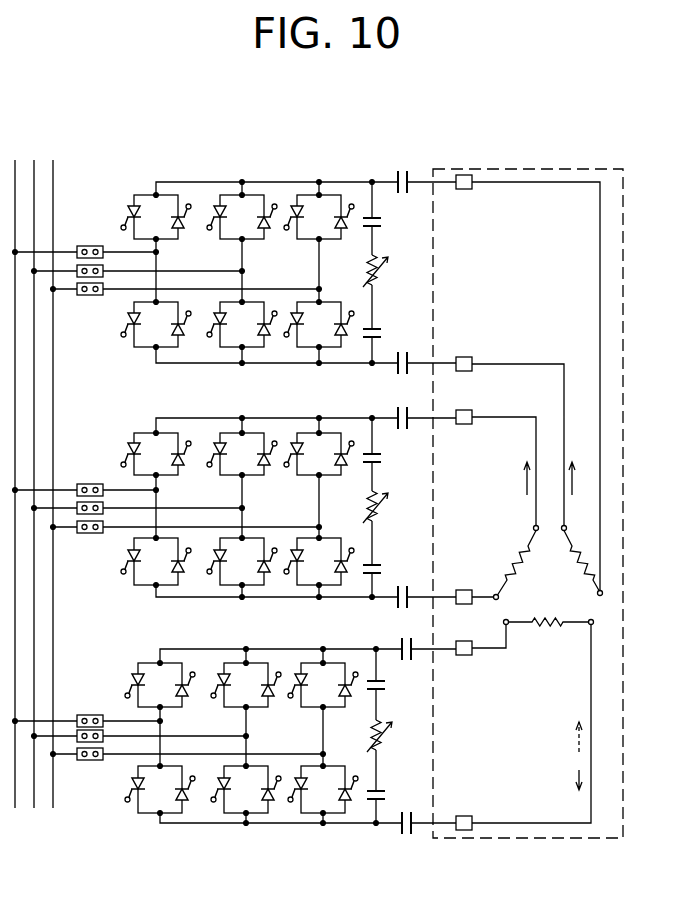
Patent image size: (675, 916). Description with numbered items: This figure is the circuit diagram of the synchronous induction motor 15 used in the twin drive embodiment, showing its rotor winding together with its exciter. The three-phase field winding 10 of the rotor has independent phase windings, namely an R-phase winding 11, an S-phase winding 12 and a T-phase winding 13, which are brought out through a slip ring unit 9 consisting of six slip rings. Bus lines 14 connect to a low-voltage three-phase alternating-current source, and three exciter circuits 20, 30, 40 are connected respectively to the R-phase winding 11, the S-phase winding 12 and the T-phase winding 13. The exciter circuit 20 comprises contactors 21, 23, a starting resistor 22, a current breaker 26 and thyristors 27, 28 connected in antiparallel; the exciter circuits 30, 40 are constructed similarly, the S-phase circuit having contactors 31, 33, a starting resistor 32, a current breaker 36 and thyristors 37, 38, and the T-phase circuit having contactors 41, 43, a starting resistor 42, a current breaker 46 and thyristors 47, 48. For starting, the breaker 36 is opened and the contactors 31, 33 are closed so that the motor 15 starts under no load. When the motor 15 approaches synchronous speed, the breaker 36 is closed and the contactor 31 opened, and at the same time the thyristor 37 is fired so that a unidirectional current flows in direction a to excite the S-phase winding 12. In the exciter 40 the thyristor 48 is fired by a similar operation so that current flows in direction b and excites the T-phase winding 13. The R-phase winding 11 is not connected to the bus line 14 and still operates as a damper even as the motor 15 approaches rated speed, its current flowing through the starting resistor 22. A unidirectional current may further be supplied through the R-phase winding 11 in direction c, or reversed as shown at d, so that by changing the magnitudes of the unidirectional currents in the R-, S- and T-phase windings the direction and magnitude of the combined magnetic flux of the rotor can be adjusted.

The slip ring unit 9 is at (462, 815).
The three-phase field winding 10 is at (548, 624).
The R-phase winding 11 is at (543, 630).
The S-phase winding 12 is at (520, 578).
The T-phase winding 13 is at (574, 578).
The bus lines 14 is at (55, 168).
The synchronous induction motor 15 is at (590, 169).
The exciter circuit 20 is at (234, 743).
The contactor 21 is at (386, 686).
The starting resistor 22 is at (391, 740).
The contactor 23 is at (400, 647).
The current breaker 26 is at (90, 762).
The thyristor 27 is at (133, 683).
The thyristor 28 is at (185, 698).
The exciter circuit 30 is at (234, 492).
The contactor 31 is at (382, 459).
The starting resistor 32 is at (387, 511).
The contactor 33 is at (396, 415).
The current breaker 36 is at (90, 534).
The thyristor 37 is at (129, 449).
The thyristor 38 is at (181, 465).
The exciter circuit 40 is at (234, 254).
The contactor 41 is at (382, 223).
The starting resistor 42 is at (387, 275).
The contactor 43 is at (398, 170).
The current breaker 46 is at (90, 296).
The thyristor 47 is at (128, 212).
The thyristor 48 is at (181, 229).